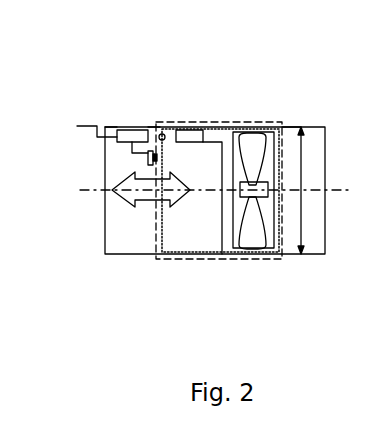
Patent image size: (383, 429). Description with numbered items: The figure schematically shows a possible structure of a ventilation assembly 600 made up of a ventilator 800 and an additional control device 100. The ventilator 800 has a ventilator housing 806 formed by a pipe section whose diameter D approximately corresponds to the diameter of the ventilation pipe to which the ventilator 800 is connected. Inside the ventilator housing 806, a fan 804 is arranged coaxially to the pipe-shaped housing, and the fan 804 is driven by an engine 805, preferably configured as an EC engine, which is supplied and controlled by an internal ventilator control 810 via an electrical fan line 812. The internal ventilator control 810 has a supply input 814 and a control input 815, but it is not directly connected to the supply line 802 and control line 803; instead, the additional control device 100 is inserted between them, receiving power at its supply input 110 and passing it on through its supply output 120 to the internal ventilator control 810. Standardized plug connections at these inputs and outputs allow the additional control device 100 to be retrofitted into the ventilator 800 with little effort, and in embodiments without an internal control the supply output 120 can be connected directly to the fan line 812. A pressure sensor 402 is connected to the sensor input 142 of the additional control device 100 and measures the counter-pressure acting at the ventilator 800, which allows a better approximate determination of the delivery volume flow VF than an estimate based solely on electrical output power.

The ventilation assembly 600 is at (343, 42).
The supply line 802 is at (70, 106).
The control line 803 is at (78, 126).
The supply input 110 is at (112, 125).
The additional control device 100 is at (129, 130).
The sensor input 142 is at (132, 143).
The pressure sensor 402 is at (147, 160).
The supply output 120 is at (153, 123).
The supply input 814 is at (195, 87).
The control input 815 is at (166, 129).
The internal ventilator control 810 is at (186, 129).
The fan line 812 is at (222, 128).
The fan 804 is at (239, 130).
The engine 805 is at (291, 126).
The ventilator housing 806 is at (163, 239).
The ventilator 800 is at (226, 261).
The diameter of the ventilator housing D is at (304, 176).
The delivery volume flow VF is at (152, 203).